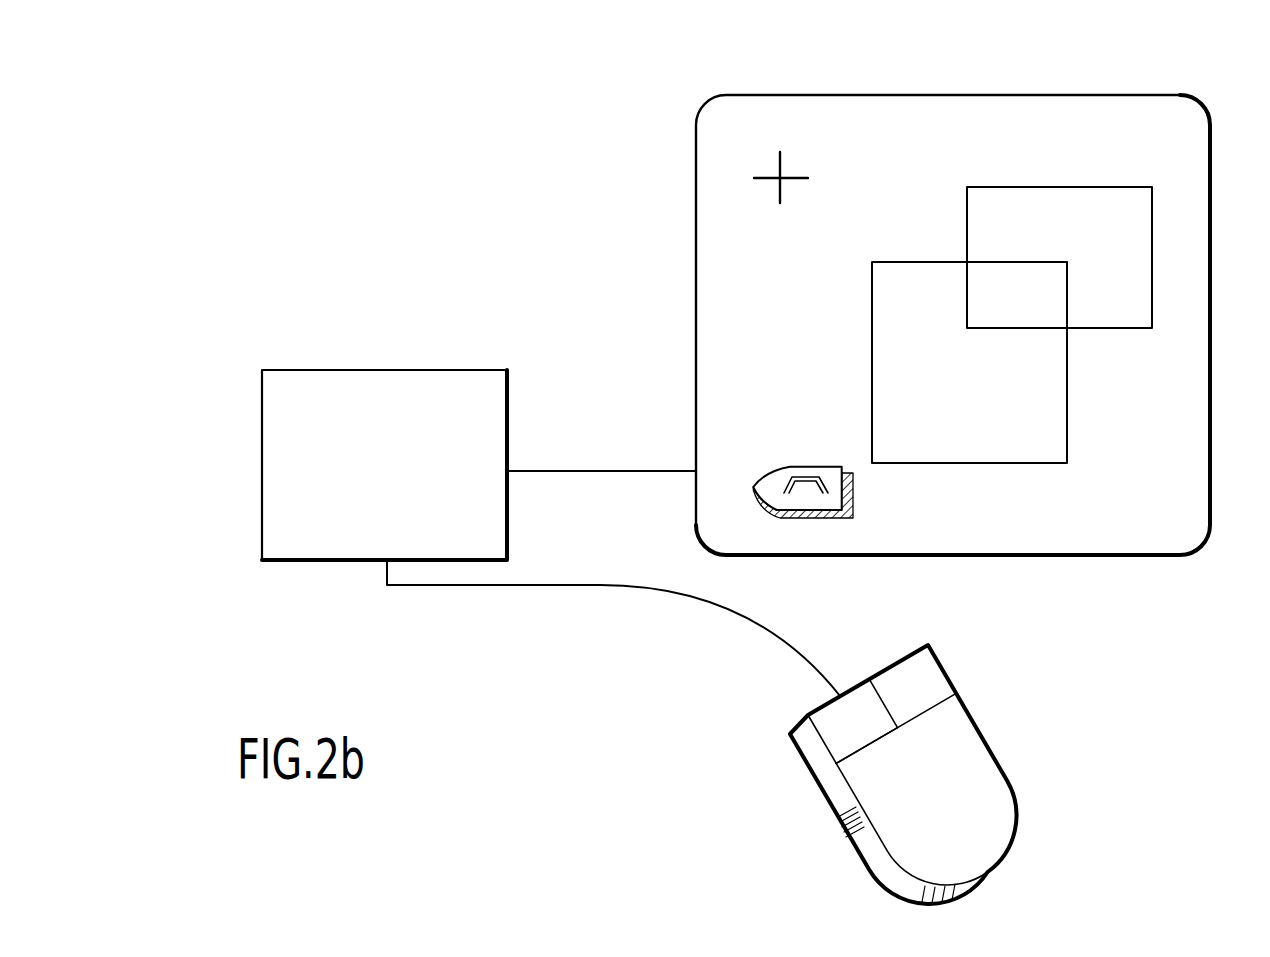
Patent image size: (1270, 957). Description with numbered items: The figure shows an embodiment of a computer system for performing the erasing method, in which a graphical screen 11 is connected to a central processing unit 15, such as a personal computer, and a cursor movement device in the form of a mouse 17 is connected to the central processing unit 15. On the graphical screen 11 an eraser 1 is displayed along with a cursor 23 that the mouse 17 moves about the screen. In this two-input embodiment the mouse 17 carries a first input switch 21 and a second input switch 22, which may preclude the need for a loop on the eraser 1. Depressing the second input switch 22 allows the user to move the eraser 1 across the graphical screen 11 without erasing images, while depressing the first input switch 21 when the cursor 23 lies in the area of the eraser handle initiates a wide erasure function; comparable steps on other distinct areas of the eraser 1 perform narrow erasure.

The eraser 1 is at (833, 475).
The graphical screen 11 is at (917, 98).
The central processing unit 15 is at (358, 375).
The mouse 17 is at (931, 773).
The first input switch 21 is at (922, 682).
The second input switch 22 is at (847, 733).
The cursor 23 is at (780, 182).